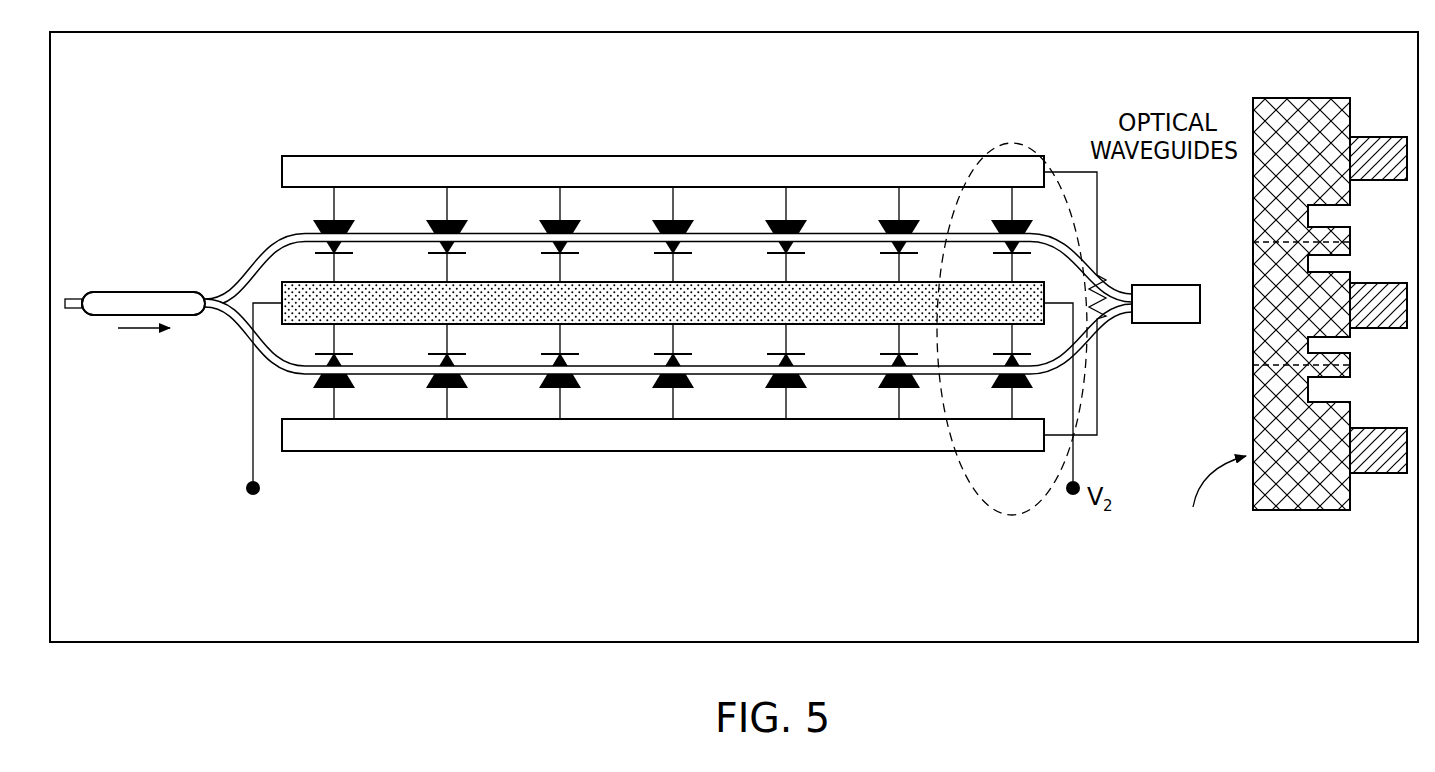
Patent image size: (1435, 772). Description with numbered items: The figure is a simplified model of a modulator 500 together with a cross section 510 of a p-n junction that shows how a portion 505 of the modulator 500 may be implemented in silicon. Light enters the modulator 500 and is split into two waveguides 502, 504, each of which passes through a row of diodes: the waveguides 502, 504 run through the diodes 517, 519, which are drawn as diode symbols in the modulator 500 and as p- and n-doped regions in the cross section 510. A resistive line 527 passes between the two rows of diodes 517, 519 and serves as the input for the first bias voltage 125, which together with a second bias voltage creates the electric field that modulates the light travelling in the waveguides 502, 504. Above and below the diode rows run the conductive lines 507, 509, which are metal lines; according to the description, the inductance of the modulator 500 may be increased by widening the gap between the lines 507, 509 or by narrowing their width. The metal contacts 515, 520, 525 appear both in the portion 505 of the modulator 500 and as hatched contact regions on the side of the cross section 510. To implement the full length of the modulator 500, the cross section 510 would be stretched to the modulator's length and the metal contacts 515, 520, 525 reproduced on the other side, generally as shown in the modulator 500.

The modulator 500 is at (282, 626).
The waveguide 502 is at (243, 274).
The waveguide 504 is at (225, 329).
The portion 505 is at (1033, 500).
The conductive line 507 is at (432, 156).
The conductive line 509 is at (490, 452).
The cross section 510 is at (1229, 355).
The metal contact 515 is at (1382, 131).
The diode 517 is at (982, 207).
The diode 519 is at (985, 398).
The metal contact 520 is at (1382, 278).
The metal contact 525 is at (1382, 424).
The resistive line 527 is at (751, 316).
The bias voltage V1 125 is at (245, 489).